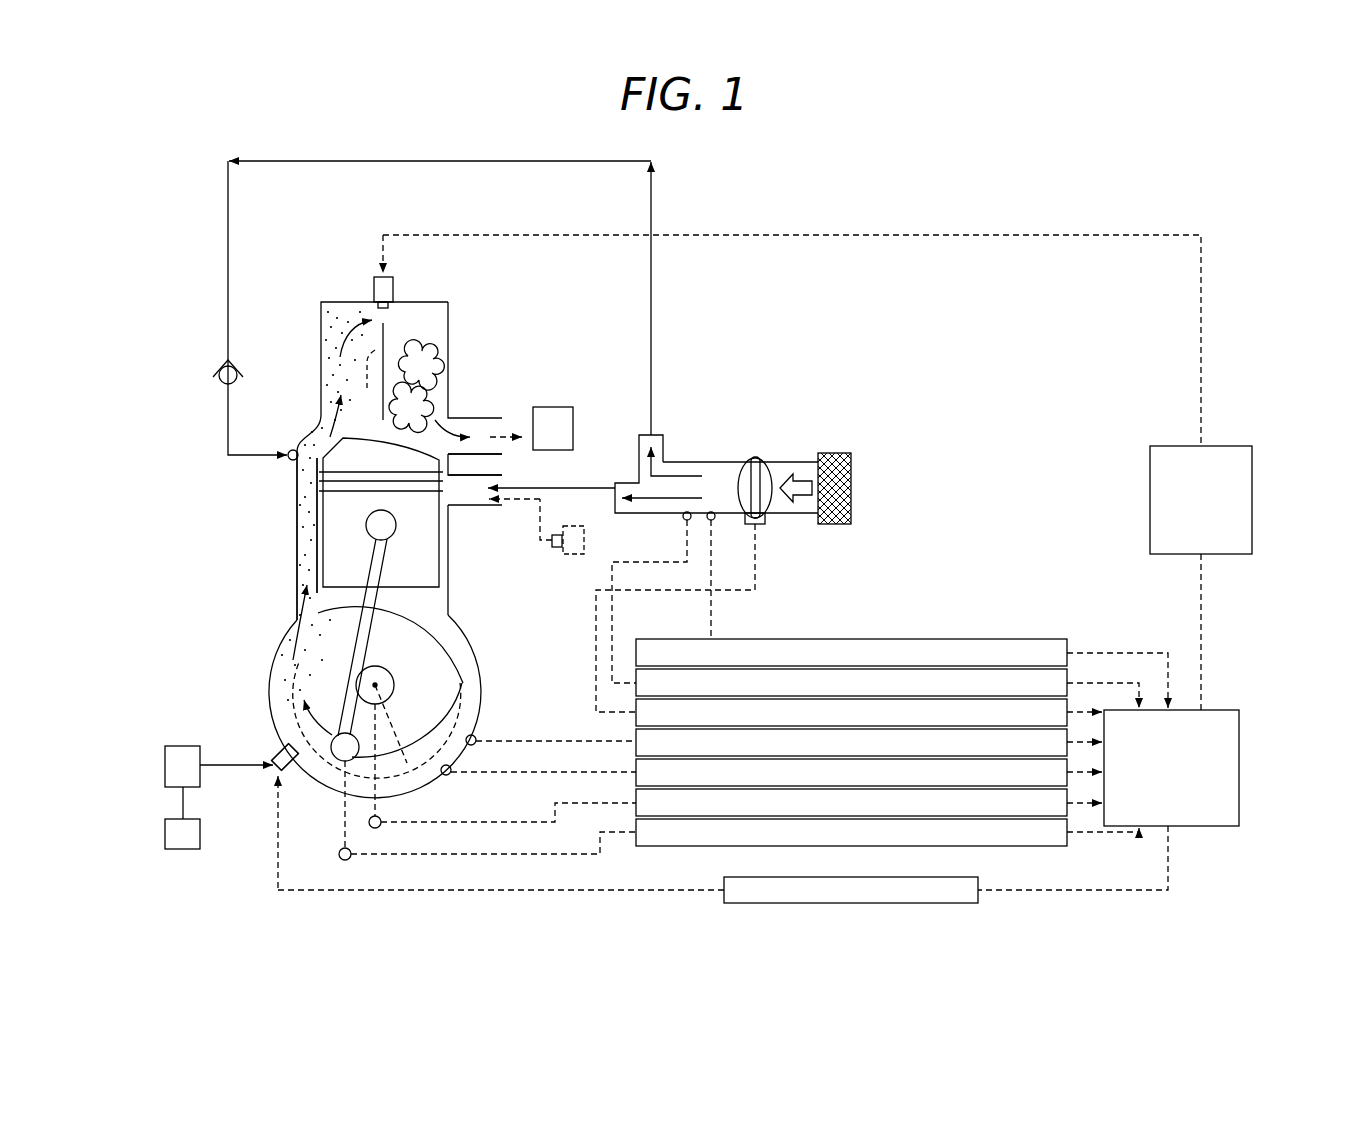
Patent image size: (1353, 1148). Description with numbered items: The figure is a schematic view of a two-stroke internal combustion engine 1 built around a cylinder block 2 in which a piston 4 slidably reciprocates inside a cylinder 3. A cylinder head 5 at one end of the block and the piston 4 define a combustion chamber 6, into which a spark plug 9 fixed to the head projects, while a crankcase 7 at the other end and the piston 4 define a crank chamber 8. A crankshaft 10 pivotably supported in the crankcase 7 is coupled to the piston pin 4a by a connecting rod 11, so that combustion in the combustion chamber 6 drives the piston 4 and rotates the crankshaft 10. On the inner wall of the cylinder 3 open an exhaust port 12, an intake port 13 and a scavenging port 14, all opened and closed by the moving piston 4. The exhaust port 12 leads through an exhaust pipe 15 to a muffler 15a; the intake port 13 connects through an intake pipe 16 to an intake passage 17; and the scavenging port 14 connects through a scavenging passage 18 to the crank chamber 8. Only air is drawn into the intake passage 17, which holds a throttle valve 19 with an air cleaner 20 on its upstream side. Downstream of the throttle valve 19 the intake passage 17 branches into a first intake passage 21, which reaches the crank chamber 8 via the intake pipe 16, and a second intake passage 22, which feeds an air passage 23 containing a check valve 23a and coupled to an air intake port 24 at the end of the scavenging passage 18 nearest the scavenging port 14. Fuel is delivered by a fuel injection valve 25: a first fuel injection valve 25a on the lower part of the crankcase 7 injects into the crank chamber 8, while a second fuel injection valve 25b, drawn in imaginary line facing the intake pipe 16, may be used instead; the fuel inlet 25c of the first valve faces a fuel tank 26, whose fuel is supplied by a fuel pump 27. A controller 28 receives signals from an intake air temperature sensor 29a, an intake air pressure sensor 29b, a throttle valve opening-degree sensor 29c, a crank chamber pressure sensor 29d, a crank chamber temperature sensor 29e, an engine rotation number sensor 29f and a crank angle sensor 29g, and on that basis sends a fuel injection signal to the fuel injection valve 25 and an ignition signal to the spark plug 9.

The engine 1 is at (312, 325).
The cylinder block 2 is at (452, 341).
The cylinder 3 is at (449, 366).
The piston 4 is at (420, 545).
The piston pin 4a is at (390, 528).
The cylinder head 5 is at (340, 301).
The combustion chamber 6 is at (415, 325).
The crankcase 7 is at (460, 625).
The crank chamber 8 is at (336, 694).
The spark plug 9 is at (393, 290).
The crankshaft 10 is at (385, 682).
The connecting rod 11 is at (363, 630).
The exhaust port 12 is at (448, 425).
The intake port 13 is at (455, 490).
The scavenging port 14 is at (315, 437).
The exhaust pipe 15 is at (480, 418).
The muffler 15a is at (553, 407).
The intake pipe 16 is at (482, 475).
The intake passage 17 is at (718, 461).
The scavenging passage 18 is at (297, 508).
The throttle valve 19 is at (760, 463).
The air cleaner 20 is at (835, 451).
The first intake passage 21 is at (639, 513).
The second intake passage 22 is at (663, 448).
The air passage 23 is at (483, 160).
The check valve 23a is at (223, 381).
The air intake port 24 is at (288, 452).
The fuel injection valve 25 is at (246, 706).
The first fuel injection valve 25a is at (277, 747).
The second fuel injection valve 25b is at (562, 557).
The fuel inlet 25c is at (274, 765).
The fuel tank 26 is at (180, 835).
The fuel pump 27 is at (180, 768).
The controller 28 is at (1242, 765).
The intake air temperature sensor 29a is at (712, 522).
The intake air pressure sensor 29b is at (688, 522).
The throttle valve opening-degree sensor 29c is at (764, 524).
The crank chamber pressure sensor 29d is at (476, 738).
The crank chamber temperature sensor 29e is at (447, 777).
The engine rotation number sensor 29f is at (375, 829).
The crank angle sensor 29g is at (342, 858).